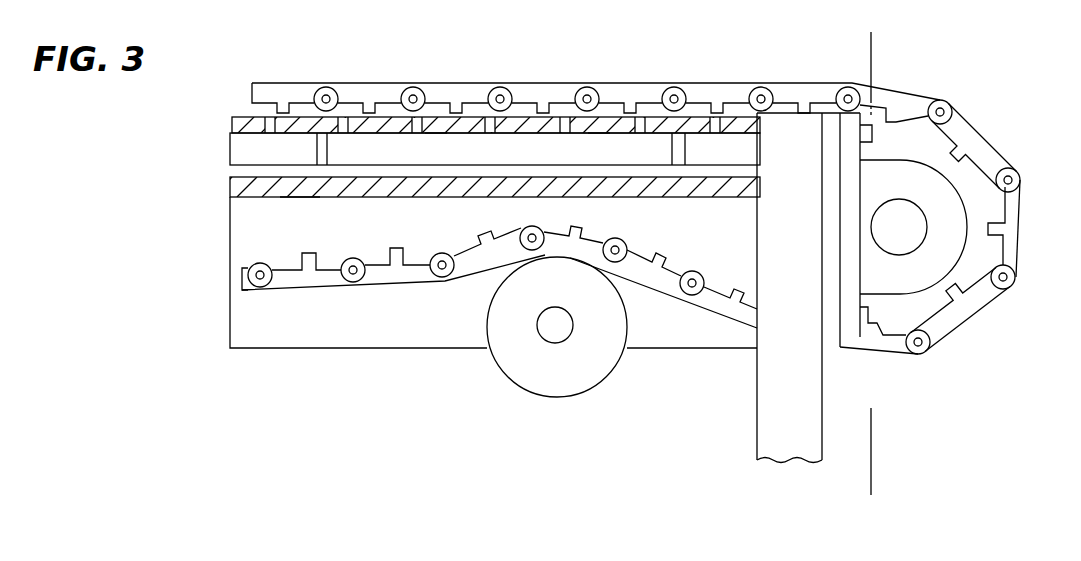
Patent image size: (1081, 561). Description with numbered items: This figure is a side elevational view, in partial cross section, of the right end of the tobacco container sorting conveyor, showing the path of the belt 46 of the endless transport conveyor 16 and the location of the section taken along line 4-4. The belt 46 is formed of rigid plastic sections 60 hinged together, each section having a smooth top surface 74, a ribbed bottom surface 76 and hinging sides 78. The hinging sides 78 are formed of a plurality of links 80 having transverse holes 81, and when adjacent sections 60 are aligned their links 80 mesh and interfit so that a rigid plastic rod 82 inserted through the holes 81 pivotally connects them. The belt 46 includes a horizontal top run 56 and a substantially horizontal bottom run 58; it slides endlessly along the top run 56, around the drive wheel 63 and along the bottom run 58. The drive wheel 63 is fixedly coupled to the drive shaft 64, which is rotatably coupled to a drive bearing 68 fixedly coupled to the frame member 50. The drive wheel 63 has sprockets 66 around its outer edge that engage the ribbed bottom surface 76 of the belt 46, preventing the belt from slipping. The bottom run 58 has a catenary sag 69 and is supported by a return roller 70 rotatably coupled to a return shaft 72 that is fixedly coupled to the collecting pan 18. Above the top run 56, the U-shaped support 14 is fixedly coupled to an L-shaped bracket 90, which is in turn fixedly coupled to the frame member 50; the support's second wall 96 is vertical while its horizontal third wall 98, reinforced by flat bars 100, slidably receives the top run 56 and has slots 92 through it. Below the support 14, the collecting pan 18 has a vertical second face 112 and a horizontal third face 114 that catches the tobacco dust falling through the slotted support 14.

The section line 4- 4 is at (835, 42).
The support 14 is at (232, 118).
The endless transport conveyor 16 is at (954, 223).
The collecting device or pan 18 is at (470, 206).
The belt 46 is at (595, 80).
The frame member 50 is at (821, 407).
The top run 56 is at (443, 78).
The bottom run 58 is at (499, 271).
The rigid plastic section 60 is at (283, 83).
The drive wheel 63 is at (1000, 156).
The drive shaft 64 is at (905, 252).
The sprockets 66 is at (1010, 248).
The drive bearing 68 is at (913, 227).
The catenary sag 69 is at (268, 292).
The return roller 70 is at (536, 331).
The return shaft 72 is at (573, 330).
The smooth top surface 74 is at (376, 83).
The ribbed bottom surface 76 is at (728, 112).
The hinging side 78 is at (326, 86).
The link 80 is at (443, 251).
The transverse hole 81 is at (352, 284).
The rigid plastic rod 82 is at (508, 83).
The bracket 90 is at (843, 158).
The slot 92 is at (435, 134).
The second wall 96 is at (470, 149).
The third wall 98 is at (598, 134).
The flat bar 100 is at (329, 148).
The second face 112 is at (229, 237).
The third face 114 is at (297, 198).